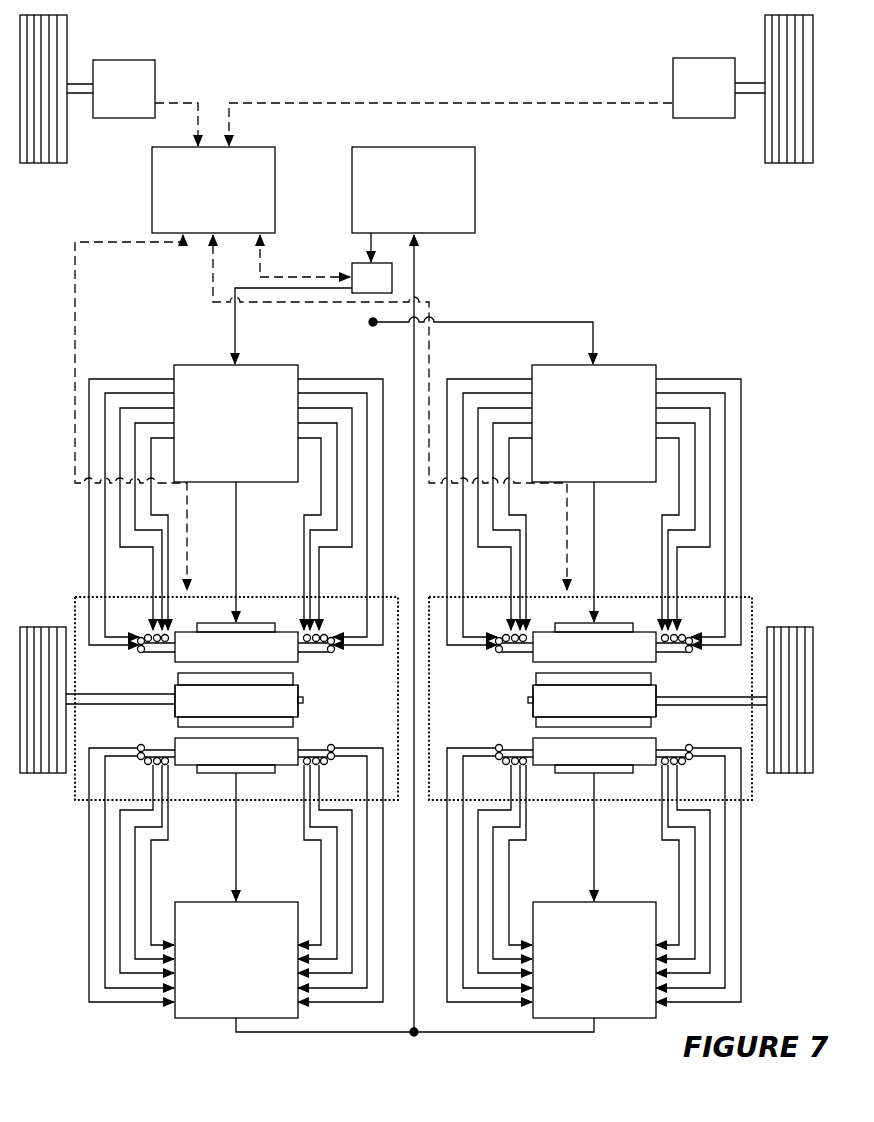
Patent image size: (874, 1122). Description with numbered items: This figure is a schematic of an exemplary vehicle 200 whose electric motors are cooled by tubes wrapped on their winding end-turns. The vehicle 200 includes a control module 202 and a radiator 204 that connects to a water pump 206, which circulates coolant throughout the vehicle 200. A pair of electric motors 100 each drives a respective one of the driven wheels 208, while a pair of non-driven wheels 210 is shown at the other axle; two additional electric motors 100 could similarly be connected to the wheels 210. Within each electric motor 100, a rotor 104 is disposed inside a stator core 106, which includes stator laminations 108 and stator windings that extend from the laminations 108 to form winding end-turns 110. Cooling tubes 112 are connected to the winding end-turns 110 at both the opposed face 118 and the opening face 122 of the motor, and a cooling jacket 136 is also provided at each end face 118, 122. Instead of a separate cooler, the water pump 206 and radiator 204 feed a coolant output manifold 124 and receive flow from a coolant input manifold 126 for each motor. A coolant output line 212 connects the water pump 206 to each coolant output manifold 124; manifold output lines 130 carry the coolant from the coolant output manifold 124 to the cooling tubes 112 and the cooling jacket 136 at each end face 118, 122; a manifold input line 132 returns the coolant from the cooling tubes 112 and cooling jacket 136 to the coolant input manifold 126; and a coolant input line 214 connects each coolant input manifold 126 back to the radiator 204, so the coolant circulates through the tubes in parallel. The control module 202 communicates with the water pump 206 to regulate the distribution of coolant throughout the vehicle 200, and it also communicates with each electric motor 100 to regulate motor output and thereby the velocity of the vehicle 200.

The electric motor 100 is at (72, 597).
The rotor 104 is at (416, 701).
The stator core 106 is at (165, 717).
The stator laminations 108 is at (415, 698).
The winding end-turns 110 is at (165, 657).
The cooling tubes 112 is at (146, 651).
The opposed face 118 is at (165, 731).
The opening face 122 is at (311, 672).
The coolant output manifold 124 is at (415, 423).
The coolant input manifold 126 is at (415, 960).
The manifold output lines 130 is at (172, 521).
The manifold input line 132 is at (168, 868).
The cooling jacket 136 is at (245, 617).
The vehicle 200 is at (411, 87).
The control module 202 is at (213, 190).
The radiator 204 is at (413, 190).
The water pump 206 is at (361, 262).
The driven wheels 208 is at (47, 790).
The non-driven wheels 210 is at (178, 82).
The coolant output line 212 is at (321, 412).
The coolant input line 214 is at (416, 297).